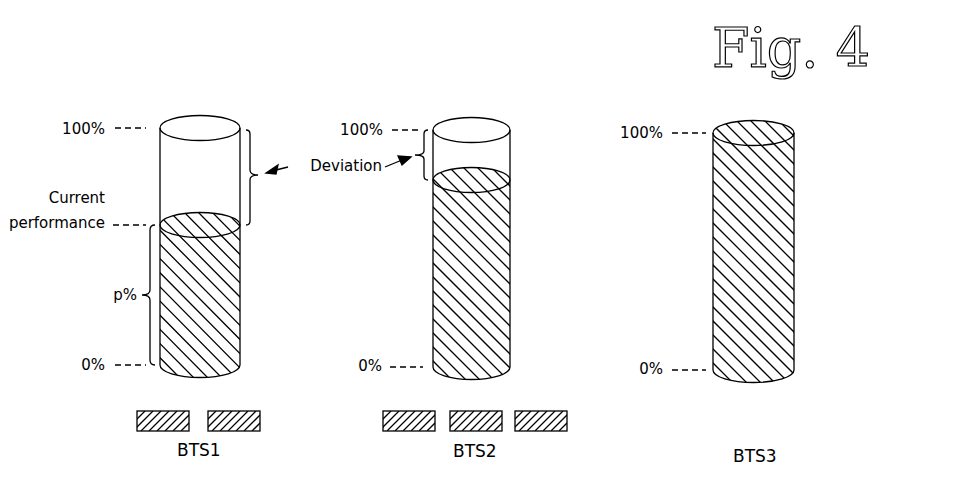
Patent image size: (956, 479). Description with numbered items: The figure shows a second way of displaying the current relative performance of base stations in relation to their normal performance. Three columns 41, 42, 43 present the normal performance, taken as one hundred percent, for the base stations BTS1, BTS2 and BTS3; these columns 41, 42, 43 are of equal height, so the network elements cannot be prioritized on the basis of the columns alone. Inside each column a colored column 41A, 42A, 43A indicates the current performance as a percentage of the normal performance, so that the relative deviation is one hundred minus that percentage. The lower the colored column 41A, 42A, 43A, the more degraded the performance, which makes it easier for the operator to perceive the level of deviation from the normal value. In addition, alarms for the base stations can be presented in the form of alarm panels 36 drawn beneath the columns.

The column 41 is at (228, 119).
The colored column 41A is at (228, 268).
The column 42 is at (497, 118).
The colored column 42A is at (495, 272).
The column 43 is at (780, 122).
The colored column 43A is at (778, 275).
The alarm panels 36 is at (258, 411).